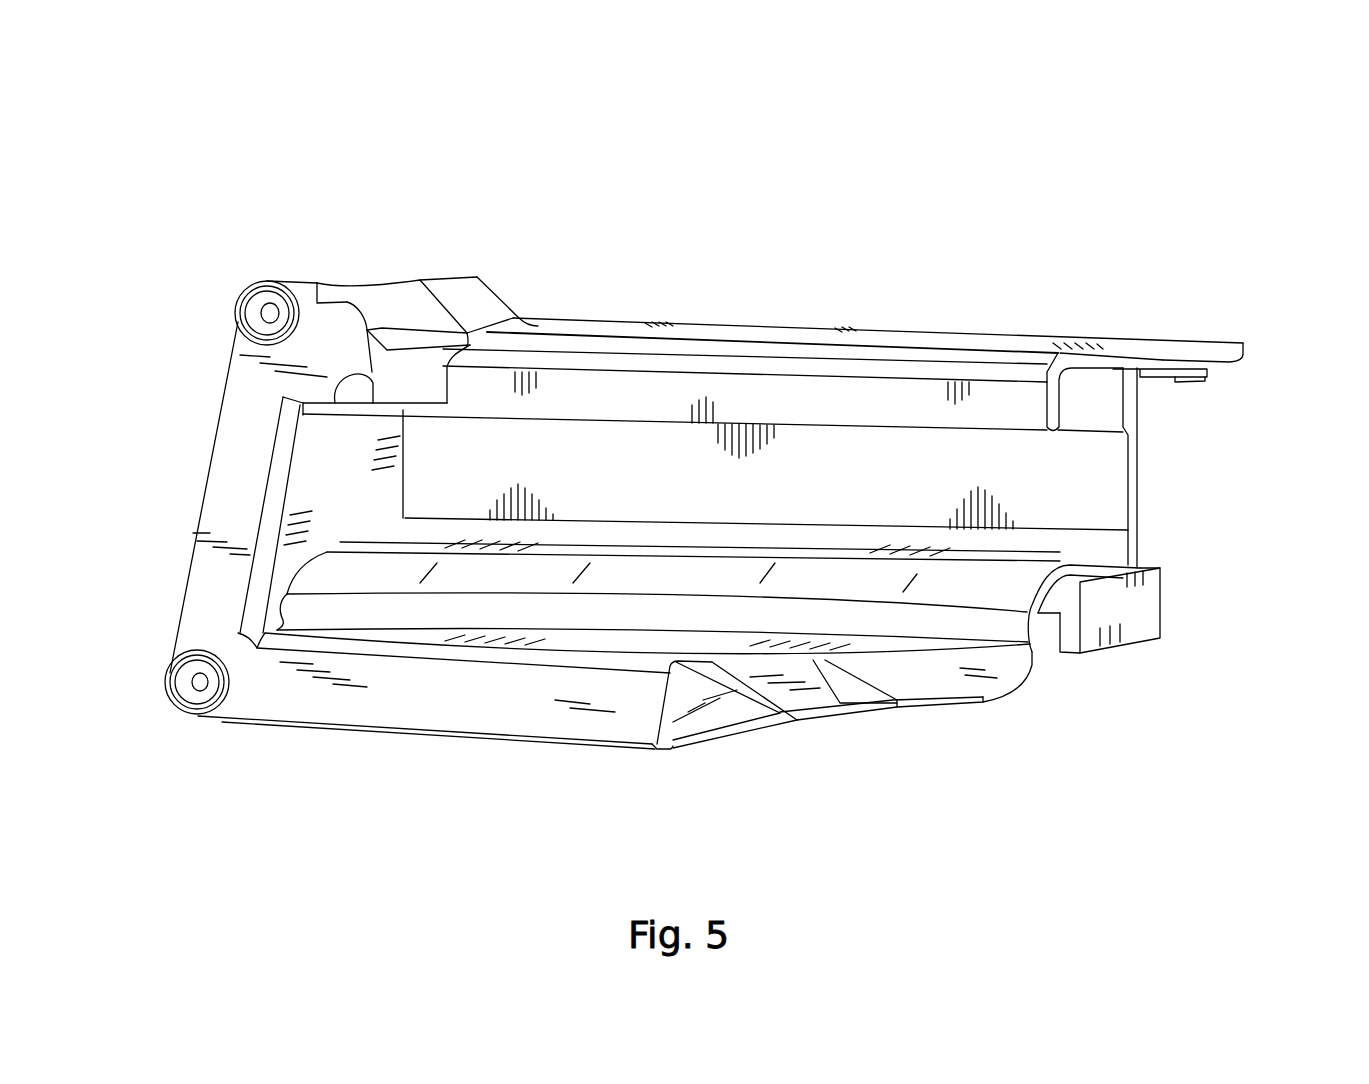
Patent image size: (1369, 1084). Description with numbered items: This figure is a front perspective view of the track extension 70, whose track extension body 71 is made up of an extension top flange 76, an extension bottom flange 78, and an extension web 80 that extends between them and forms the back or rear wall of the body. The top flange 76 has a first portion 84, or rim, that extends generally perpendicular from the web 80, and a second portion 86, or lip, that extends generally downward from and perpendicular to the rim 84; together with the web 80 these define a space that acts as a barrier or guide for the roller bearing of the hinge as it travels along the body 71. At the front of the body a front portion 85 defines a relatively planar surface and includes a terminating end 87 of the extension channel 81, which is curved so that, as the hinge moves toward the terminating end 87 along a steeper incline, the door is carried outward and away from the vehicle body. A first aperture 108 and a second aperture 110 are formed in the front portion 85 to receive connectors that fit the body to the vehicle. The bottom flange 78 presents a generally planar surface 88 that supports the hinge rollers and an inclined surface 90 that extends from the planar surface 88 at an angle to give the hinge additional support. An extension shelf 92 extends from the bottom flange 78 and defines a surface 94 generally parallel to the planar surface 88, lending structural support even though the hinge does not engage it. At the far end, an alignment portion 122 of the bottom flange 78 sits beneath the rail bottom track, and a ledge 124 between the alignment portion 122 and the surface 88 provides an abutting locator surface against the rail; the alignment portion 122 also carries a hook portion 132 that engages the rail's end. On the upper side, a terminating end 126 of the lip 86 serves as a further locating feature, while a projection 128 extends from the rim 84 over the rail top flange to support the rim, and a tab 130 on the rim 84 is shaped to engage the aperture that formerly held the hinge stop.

The track extension 70 is at (870, 170).
The track extension body 71 is at (445, 272).
The extension top flange 76 is at (1046, 331).
The extension bottom flange 78 is at (1068, 563).
The extension web 80 is at (1093, 477).
The extension channel 81 is at (603, 467).
The first portion (rim) 84 is at (921, 333).
The front portion 85 is at (222, 561).
The second portion (lip) 86 is at (785, 397).
The terminating end 87 is at (283, 449).
The planar surface 88 is at (503, 545).
The inclined surface 90 is at (935, 583).
The extension shelf 92 is at (607, 752).
The surface 94 is at (600, 640).
The first aperture 108 is at (258, 312).
The second aperture 110 is at (192, 683).
The alignment portion 122 is at (1153, 598).
The ledge 124 is at (1080, 572).
The terminating end of the lip 126 is at (1053, 397).
The projection 128 is at (1187, 347).
The tab 130 is at (1203, 373).
The hook portion 132 is at (1052, 628).